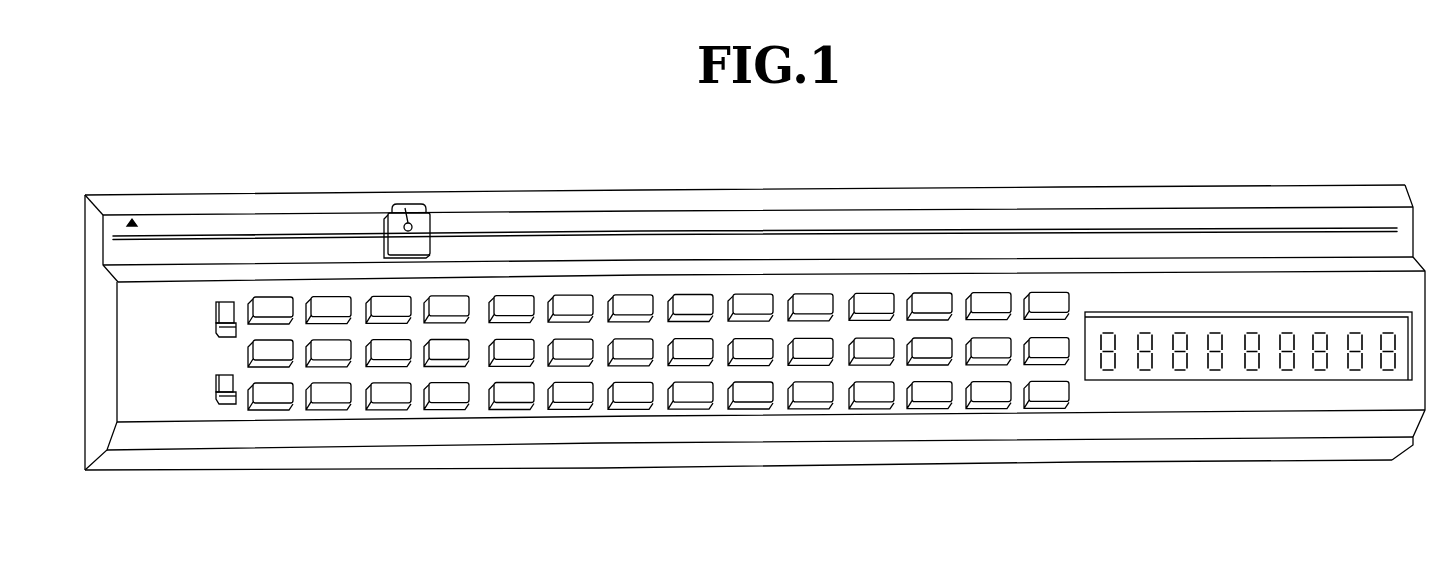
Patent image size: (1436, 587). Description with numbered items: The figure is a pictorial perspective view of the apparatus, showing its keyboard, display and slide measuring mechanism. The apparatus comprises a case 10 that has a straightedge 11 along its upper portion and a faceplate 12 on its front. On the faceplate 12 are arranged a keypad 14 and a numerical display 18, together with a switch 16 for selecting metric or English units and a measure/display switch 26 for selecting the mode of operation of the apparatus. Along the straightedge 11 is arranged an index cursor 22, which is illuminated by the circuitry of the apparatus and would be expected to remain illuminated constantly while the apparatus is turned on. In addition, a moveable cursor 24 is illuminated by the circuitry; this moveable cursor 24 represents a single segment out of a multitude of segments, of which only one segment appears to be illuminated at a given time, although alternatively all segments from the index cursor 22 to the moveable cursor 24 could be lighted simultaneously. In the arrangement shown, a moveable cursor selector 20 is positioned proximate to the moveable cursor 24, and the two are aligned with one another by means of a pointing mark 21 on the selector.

The case 10 is at (545, 466).
The straightedge 11 is at (975, 186).
The faceplate 12 is at (132, 413).
The keypad 14 is at (810, 413).
The switch 16 is at (221, 301).
The numerical display 18 is at (1381, 375).
The moveable cursor selector 20 is at (408, 240).
The pointing mark 21 is at (400, 213).
The index cursor 22 is at (124, 198).
The moveable cursor 24 is at (395, 200).
The measure/display switch 26 is at (220, 404).